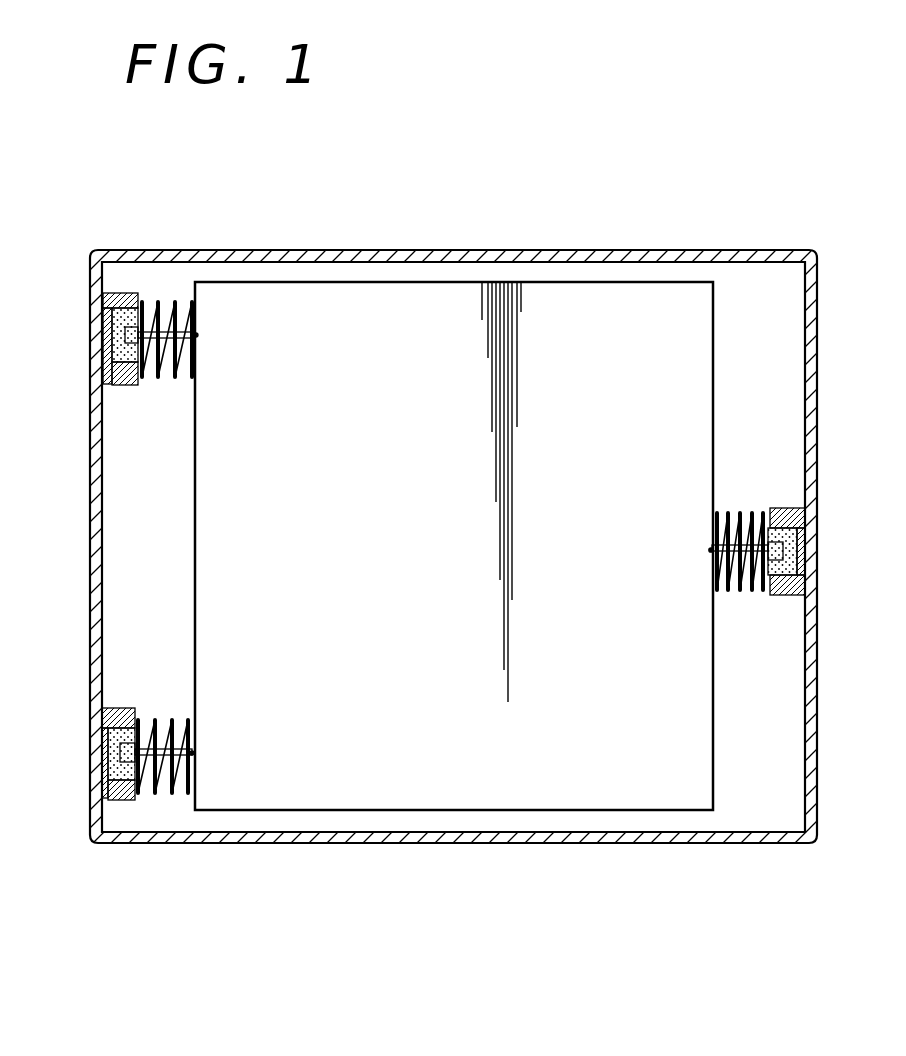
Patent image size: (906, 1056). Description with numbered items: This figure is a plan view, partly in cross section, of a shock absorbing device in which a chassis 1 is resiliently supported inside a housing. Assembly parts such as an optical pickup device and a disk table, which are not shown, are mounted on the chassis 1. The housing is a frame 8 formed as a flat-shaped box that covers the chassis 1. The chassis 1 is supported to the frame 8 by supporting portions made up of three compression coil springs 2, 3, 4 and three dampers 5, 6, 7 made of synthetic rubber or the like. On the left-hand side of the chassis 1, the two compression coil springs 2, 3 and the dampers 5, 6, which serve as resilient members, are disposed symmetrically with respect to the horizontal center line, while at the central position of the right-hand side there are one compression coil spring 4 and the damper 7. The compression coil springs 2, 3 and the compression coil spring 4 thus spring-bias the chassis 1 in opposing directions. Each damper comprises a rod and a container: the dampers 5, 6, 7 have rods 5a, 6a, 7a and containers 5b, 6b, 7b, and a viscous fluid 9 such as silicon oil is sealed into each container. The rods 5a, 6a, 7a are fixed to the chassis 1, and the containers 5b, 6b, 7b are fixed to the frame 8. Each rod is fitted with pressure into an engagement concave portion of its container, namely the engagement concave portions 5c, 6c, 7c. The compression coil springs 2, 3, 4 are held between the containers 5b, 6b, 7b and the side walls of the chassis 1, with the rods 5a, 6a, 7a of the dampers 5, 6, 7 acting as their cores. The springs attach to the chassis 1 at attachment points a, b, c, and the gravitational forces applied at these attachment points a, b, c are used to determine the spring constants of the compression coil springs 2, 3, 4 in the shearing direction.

The chassis 1 is at (442, 295).
The compression coil spring 2 is at (172, 300).
The compression coil spring 3 is at (160, 795).
The compression coil spring 4 is at (730, 592).
The damper 5 is at (147, 363).
The rod 5a is at (143, 330).
The container 5b is at (107, 390).
The engagement concave portion 5c is at (127, 387).
The damper 6 is at (107, 771).
The rod 6a is at (120, 727).
The container 6b is at (113, 797).
The engagement concave portion 6c is at (112, 765).
The damper 7 is at (749, 538).
The rod 7a is at (730, 548).
The container 7b is at (780, 596).
The engagement concave portion 7c is at (775, 510).
The frame 8 is at (690, 252).
The viscous fluid 9 is at (108, 340).
The attachment point a is at (197, 336).
The attachment point b is at (193, 752).
The attachment point c is at (709, 550).